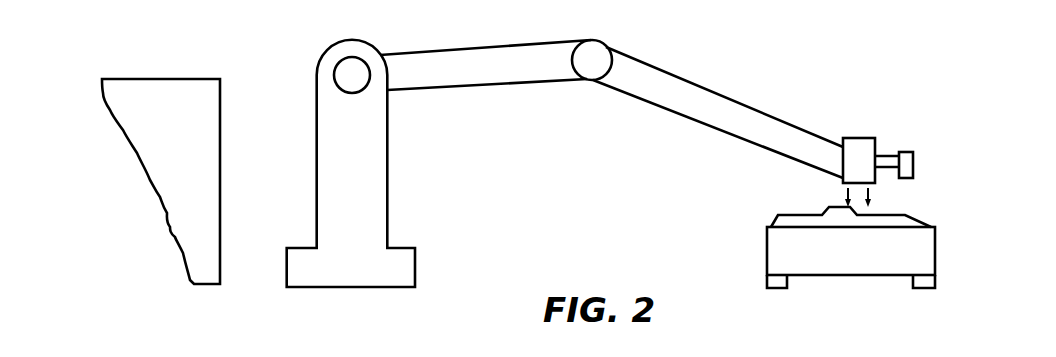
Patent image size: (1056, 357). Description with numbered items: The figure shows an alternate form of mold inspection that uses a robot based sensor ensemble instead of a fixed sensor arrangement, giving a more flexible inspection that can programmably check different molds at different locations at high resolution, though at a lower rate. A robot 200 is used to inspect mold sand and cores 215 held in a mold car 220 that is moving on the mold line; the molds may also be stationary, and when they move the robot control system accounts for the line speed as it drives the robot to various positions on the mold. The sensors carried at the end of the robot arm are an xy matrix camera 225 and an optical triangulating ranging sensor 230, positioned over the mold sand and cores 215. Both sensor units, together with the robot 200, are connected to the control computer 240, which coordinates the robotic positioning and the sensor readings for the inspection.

The robot 200 is at (380, 158).
The mold sand and cores 215 is at (907, 217).
The mold car 220 is at (937, 253).
The xy matrix camera 225 is at (863, 138).
The optical triangulating ranging sensor 230 is at (908, 160).
The control computer 240 is at (188, 79).